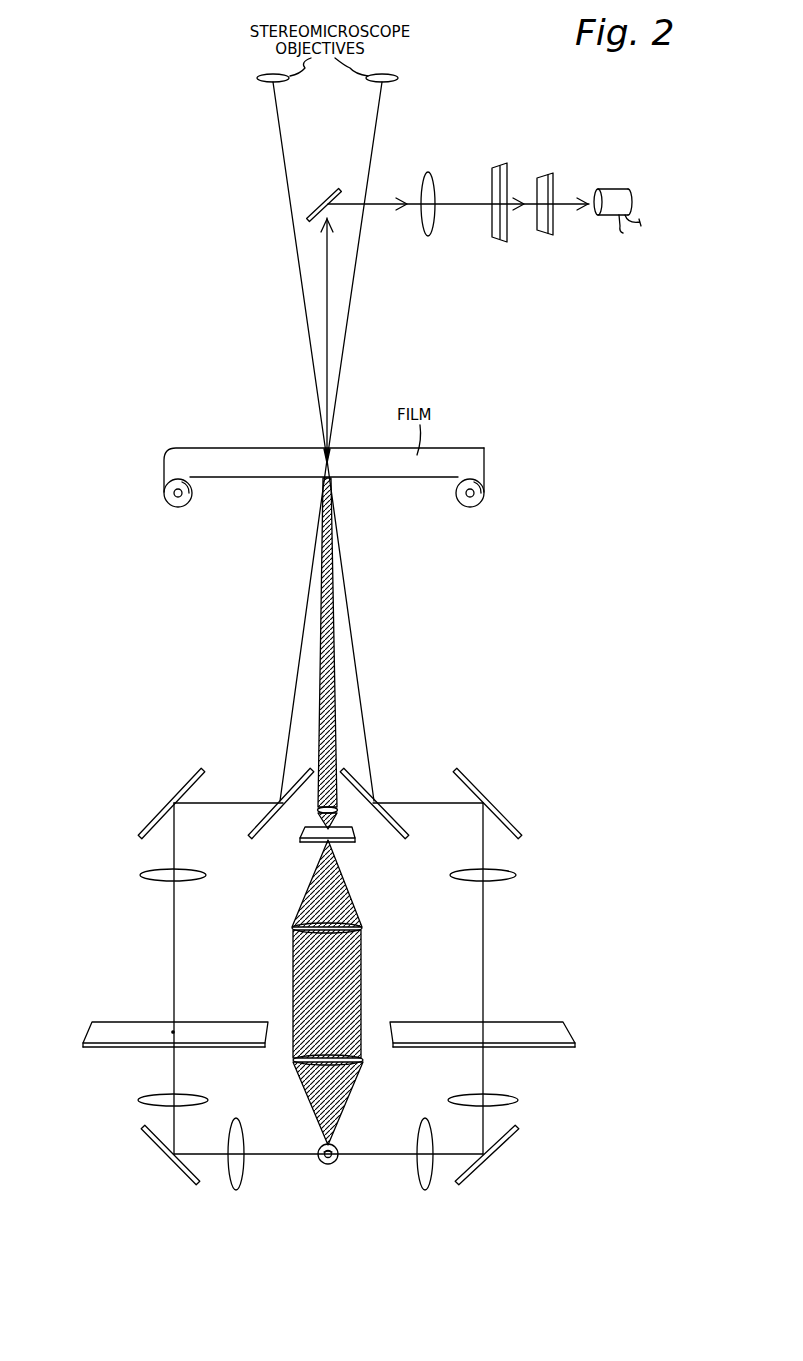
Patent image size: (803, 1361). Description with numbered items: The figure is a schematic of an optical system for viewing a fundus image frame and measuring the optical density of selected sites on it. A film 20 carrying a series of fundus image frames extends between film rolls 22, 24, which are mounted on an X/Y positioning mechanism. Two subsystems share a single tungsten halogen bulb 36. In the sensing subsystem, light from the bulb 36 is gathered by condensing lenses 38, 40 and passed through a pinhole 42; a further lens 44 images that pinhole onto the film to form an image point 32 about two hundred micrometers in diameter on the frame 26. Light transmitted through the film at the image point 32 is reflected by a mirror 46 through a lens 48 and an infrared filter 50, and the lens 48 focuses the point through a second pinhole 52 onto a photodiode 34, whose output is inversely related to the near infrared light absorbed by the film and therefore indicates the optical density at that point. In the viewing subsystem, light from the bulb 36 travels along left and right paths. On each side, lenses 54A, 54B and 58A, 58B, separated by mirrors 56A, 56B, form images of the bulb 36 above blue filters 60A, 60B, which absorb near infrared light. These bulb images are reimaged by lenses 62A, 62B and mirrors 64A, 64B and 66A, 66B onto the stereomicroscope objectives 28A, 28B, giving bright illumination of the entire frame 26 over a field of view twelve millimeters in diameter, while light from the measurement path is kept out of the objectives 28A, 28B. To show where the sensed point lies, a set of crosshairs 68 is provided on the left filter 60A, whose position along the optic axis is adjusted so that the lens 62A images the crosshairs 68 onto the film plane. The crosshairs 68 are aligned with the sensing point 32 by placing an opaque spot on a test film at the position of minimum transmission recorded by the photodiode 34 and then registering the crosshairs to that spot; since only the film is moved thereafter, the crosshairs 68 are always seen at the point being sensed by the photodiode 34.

The film 20 is at (445, 455).
The film roll 22 is at (197, 478).
The film roll 24 is at (462, 505).
The frame 26 is at (348, 462).
The stereomicroscope objective 28A is at (398, 80).
The stereomicroscope objective 28B is at (258, 80).
The image point 32 is at (325, 459).
The photodiode 34 is at (621, 190).
The tungsten halogen bulb 36 is at (333, 1164).
The condensing lens 38 is at (360, 1063).
The condensing lens 40 is at (364, 928).
The pinhole 42 is at (340, 840).
The lens 44 is at (317, 815).
The mirror 46 is at (340, 188).
The lens 48 is at (431, 176).
The infrared filter 50 is at (500, 164).
The pinhole 52 is at (553, 174).
The lens 54A is at (237, 1191).
The lens 54B is at (418, 1191).
The mirror 56A is at (182, 1178).
The mirror 56B is at (475, 1178).
The lens 58A is at (150, 1094).
The lens 58B is at (510, 1095).
The blue filter 60A is at (95, 1022).
The blue filter 60B is at (560, 1022).
The lens 62A is at (150, 880).
The lens 62B is at (495, 880).
The mirror 64A is at (172, 800).
The mirror 64B is at (492, 802).
The mirror 66A is at (290, 785).
The mirror 66B is at (365, 785).
The crosshairs 68 is at (173, 1032).